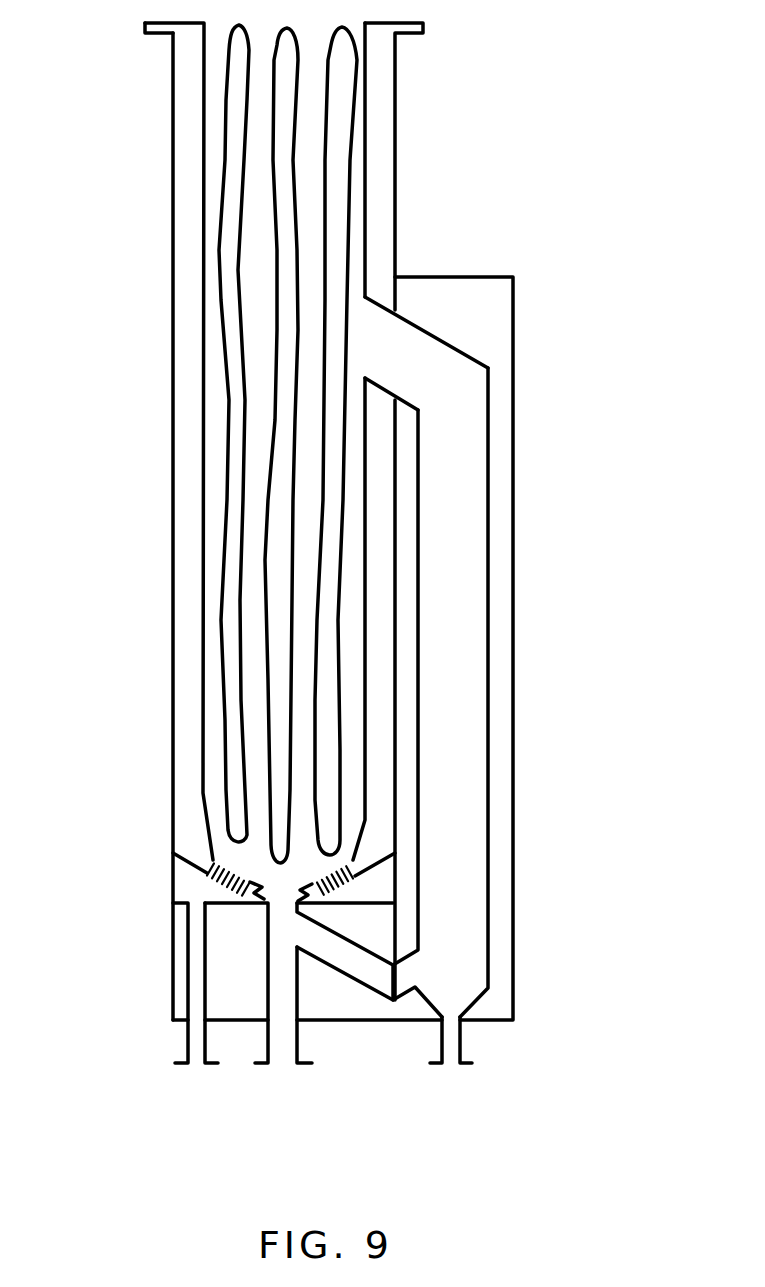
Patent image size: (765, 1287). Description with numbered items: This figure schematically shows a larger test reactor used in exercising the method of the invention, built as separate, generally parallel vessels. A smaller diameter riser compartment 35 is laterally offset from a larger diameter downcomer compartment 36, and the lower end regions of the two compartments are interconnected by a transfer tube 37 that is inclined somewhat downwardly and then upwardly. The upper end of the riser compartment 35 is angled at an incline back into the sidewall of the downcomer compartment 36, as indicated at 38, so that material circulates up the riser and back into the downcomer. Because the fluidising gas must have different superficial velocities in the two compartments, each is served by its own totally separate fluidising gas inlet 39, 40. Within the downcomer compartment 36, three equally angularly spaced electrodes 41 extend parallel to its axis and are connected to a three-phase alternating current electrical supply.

The riser compartment 35 is at (462, 725).
The downcomer compartment 36 is at (248, 690).
The transfer tube 37 is at (392, 957).
The angled upper end of riser compartment 38 is at (418, 352).
The fluidising gas inlet 39 is at (190, 1043).
The fluidising gas inlet 40 is at (455, 1048).
The electrodes 41 is at (337, 392).